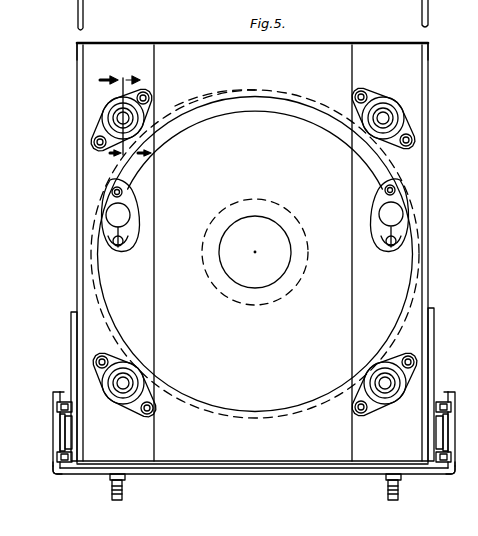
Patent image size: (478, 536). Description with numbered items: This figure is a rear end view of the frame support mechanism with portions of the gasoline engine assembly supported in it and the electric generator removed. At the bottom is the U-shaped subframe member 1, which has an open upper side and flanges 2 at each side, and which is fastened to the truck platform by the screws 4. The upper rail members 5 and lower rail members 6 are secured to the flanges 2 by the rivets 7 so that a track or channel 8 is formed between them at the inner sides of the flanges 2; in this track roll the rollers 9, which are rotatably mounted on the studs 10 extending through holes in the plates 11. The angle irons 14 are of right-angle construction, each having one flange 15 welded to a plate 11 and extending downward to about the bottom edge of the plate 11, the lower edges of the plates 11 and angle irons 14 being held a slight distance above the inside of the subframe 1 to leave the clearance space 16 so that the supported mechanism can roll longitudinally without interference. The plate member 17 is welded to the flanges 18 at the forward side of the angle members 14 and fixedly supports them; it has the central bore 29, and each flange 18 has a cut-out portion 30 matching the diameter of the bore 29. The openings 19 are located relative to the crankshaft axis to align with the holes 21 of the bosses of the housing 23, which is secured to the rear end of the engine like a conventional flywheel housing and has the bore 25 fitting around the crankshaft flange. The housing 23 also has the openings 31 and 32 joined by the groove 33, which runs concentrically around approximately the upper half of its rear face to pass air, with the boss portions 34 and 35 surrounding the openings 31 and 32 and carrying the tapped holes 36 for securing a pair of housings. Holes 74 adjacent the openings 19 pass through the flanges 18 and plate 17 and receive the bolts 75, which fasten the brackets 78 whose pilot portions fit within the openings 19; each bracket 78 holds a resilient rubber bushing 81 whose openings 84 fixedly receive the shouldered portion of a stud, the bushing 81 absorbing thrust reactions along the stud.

The subframe member 1 is at (81, 473).
The flanges 2 is at (54, 394).
The screws 4 is at (123, 492).
The upper rail members 5 is at (62, 392).
The lower rail members 6 is at (56, 471).
The rivets 7 is at (57, 407).
The track or channel 8 is at (61, 428).
The rollers or wheels 9 is at (67, 440).
The studs 10 is at (125, 113).
The plates 11 is at (71, 327).
The angle irons 14 is at (109, 4).
The flanges 15 is at (78, 12).
The clearance space 16 is at (288, 471).
The plate member 17 is at (193, 51).
The flanges 18 is at (105, 52).
The holes or openings 19 is at (102, 118).
The holes or openings 21 is at (110, 124).
The housing 23 is at (220, 80).
The bore 25 is at (227, 218).
The hole or bore 29 is at (300, 92).
The cut-out portion 30 is at (414, 165).
The hole or opening 31 is at (112, 215).
The hole or opening 32 is at (398, 211).
The groove or channel 33 is at (338, 147).
The boss portion 34 is at (110, 194).
The boss portion 35 is at (394, 191).
The tapped holes 36 is at (125, 238).
The holes or openings 74 is at (150, 97).
The bolts 75 is at (146, 94).
The brackets 78 is at (110, 100).
The resilient bushing 81 is at (138, 124).
The openings 84 is at (128, 124).